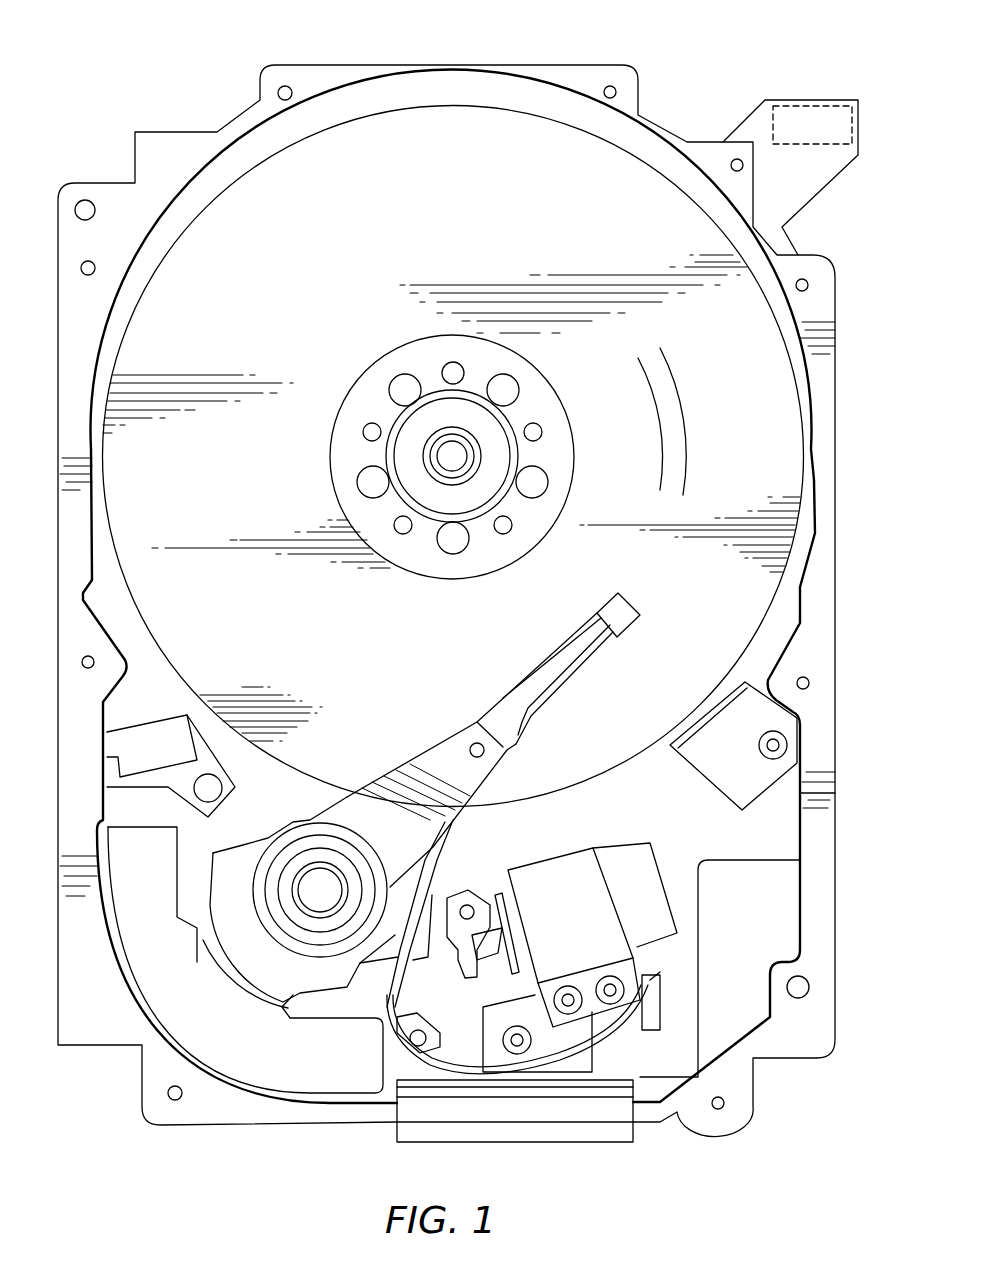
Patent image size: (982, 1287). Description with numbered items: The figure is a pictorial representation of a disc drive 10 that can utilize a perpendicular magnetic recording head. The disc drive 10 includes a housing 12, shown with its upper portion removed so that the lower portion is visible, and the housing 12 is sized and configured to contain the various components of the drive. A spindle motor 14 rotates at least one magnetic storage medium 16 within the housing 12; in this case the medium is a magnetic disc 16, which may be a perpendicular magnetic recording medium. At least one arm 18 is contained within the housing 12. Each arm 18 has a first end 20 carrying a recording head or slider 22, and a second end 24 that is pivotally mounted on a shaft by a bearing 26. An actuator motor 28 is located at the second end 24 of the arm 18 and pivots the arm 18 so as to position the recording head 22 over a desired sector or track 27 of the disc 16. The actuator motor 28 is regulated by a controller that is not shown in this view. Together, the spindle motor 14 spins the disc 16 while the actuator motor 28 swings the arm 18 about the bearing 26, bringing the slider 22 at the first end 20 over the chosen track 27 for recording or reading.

The disc drive 10 is at (457, 580).
The housing 12 is at (590, 78).
The spindle motor 14 is at (447, 462).
The magnetic storage medium 16 is at (362, 243).
The arm 18 is at (438, 763).
The first end 20 is at (560, 647).
The slider 22 is at (620, 612).
The second end 24 is at (347, 825).
The bearing 26 is at (310, 878).
The track 27 is at (670, 430).
The actuator motor 28 is at (208, 1015).